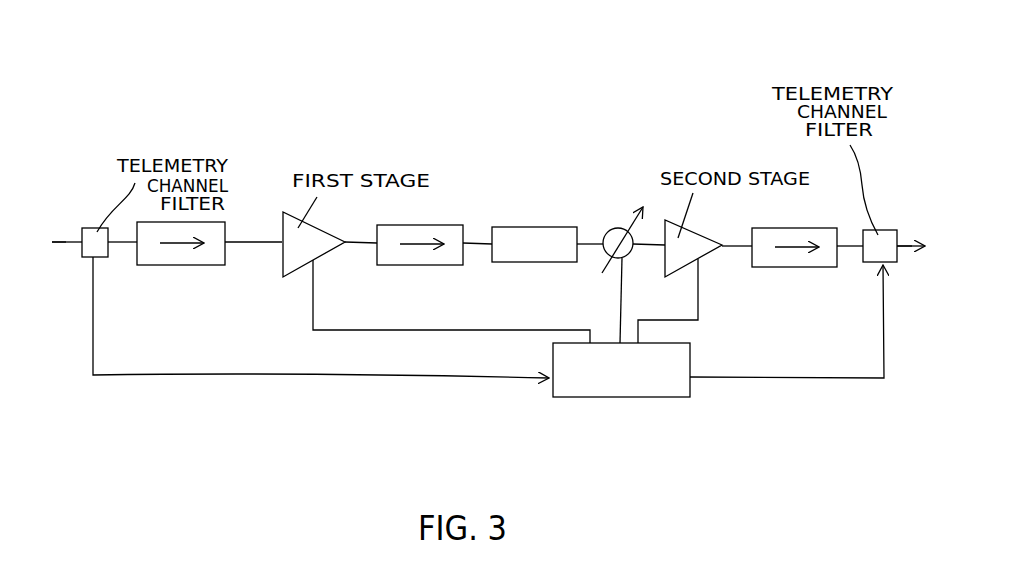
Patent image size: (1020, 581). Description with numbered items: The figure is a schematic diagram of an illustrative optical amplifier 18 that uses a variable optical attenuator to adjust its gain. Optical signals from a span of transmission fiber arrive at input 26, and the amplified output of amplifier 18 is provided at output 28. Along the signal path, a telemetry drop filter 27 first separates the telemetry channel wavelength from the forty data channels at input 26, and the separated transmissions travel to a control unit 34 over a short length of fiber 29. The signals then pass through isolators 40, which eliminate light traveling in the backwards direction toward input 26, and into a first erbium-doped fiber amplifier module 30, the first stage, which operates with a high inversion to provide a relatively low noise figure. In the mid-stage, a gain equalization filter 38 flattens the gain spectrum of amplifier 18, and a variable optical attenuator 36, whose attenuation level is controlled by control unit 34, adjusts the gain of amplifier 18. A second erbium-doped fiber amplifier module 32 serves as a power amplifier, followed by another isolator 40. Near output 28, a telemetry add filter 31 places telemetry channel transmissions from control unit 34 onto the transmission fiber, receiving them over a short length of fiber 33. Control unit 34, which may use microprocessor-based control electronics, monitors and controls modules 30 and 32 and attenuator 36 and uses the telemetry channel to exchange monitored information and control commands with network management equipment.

The amplifier 18 is at (538, 70).
The input 26 is at (66, 242).
The telemetry drop filter 27 is at (102, 248).
The output 28 is at (903, 239).
The short length of fiber 29 is at (303, 375).
The first erbium-doped fiber amplifier module 30 is at (284, 270).
The telemetry add filter 31 is at (897, 262).
The second erbium-doped fiber amplifier module 32 is at (664, 268).
The short length of fiber 33 is at (780, 377).
The control unit 34 is at (635, 397).
The variable optical attenuator 36 is at (600, 258).
The gain equalization filter 38 is at (510, 227).
The isolators 40 is at (190, 265).